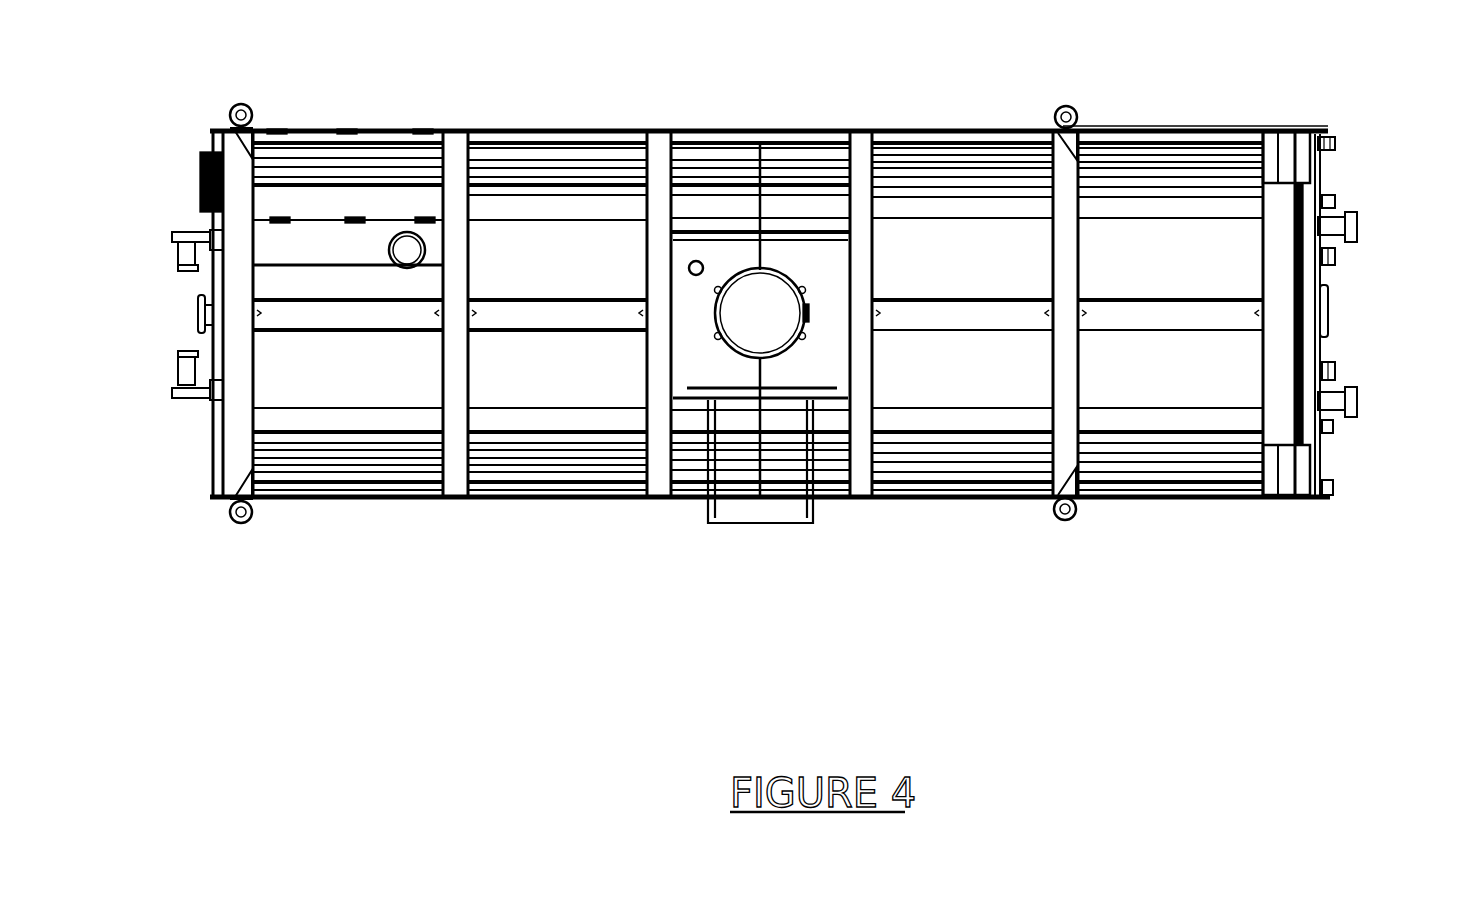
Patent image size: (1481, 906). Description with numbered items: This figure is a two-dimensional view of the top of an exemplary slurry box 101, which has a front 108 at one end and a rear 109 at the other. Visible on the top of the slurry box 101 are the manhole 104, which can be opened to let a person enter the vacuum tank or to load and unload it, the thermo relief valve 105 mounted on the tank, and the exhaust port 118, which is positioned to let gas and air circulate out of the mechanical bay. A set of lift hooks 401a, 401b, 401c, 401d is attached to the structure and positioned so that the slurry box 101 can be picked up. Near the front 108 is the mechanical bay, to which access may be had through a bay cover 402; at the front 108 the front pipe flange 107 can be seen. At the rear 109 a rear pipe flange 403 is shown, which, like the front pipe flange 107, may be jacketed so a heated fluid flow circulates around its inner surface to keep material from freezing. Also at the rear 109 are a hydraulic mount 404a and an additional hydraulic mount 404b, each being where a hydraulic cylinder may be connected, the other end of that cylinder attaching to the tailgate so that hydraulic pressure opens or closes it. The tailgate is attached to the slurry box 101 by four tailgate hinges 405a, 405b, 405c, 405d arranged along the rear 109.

The slurry box 101 is at (1200, 128).
The manhole 104 is at (782, 278).
The thermo relief valve 105 is at (698, 260).
The front pipe flange 107 is at (200, 302).
The front 108 is at (210, 432).
The rear 109 is at (1320, 465).
The exhaust port 118 is at (418, 220).
The lift hook 401a is at (1070, 105).
The lift hook 401b is at (1066, 522).
The lift hook 401c is at (243, 525).
The lift hook 401d is at (243, 103).
The bay cover 402 is at (372, 128).
The rear pipe flange 403 is at (1330, 312).
The hydraulic mount 404a is at (1358, 225).
The hydraulic mount 404b is at (1360, 405).
The tailgate hinge 405a is at (1333, 137).
The tailgate hinge 405b is at (1338, 256).
The tailgate hinge 405c is at (1338, 370).
The tailgate hinge 405d is at (1330, 500).